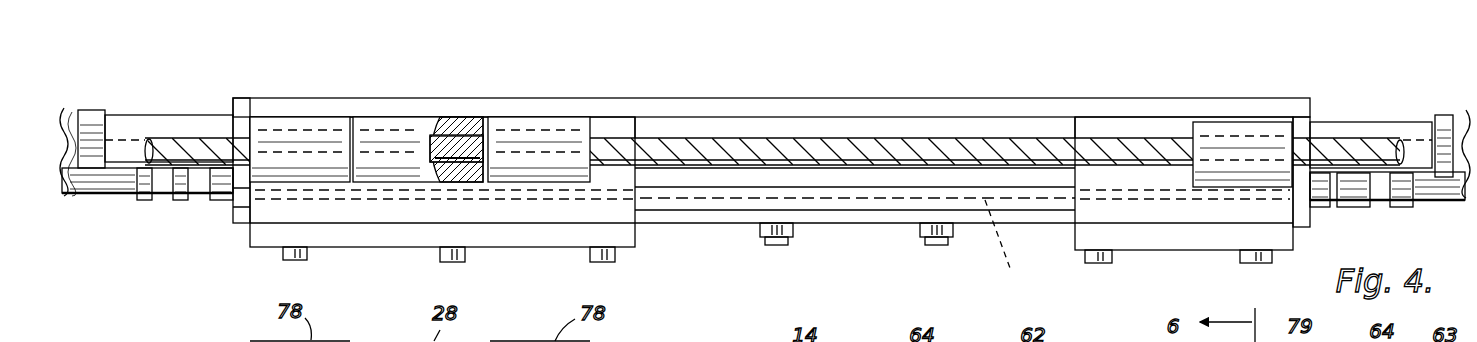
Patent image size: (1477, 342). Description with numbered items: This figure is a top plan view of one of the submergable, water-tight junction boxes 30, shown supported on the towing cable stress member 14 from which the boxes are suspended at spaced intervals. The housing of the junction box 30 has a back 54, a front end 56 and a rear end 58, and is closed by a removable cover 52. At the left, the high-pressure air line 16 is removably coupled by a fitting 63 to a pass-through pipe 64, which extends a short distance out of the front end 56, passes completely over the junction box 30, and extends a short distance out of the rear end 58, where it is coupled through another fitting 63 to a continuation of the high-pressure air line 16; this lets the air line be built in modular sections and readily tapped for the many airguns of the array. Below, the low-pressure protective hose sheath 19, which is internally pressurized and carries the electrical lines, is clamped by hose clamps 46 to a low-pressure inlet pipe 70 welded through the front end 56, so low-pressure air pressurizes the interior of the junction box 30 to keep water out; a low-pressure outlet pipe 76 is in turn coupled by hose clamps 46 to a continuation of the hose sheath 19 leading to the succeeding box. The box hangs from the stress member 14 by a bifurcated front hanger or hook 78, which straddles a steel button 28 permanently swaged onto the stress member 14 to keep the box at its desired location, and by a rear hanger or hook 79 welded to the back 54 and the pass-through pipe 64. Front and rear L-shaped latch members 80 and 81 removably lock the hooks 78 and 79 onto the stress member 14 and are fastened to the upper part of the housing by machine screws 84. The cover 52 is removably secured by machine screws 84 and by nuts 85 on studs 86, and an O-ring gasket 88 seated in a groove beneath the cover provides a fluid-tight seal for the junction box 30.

The stress member 14 is at (870, 140).
The high-pressure air line 16 is at (68, 118).
The low-pressure protective hose sheath 19 is at (92, 196).
The steel button 28 is at (415, 122).
The junction box 30 is at (1320, 96).
The hose clamp 46 is at (180, 202).
The removable cover 52 is at (832, 215).
The back 54 is at (1016, 99).
The front end 56 is at (242, 225).
The rear end 58 is at (1312, 222).
The fitting 63 is at (92, 112).
The pass-through pipe 64 is at (195, 116).
The low-pressure inlet pipe 70 is at (213, 202).
The low-pressure outlet pipe 76 is at (1322, 208).
The front hanger or hook 78 is at (300, 122).
The rear hanger or hook 79 is at (1230, 124).
The front L-shaped latch member 80 is at (411, 251).
The rear L-shaped latch member 81 is at (1195, 258).
The machine screw 84 is at (455, 263).
The nut 85 is at (760, 232).
The stud 86 is at (778, 246).
The O-ring gasket 88 is at (1016, 242).